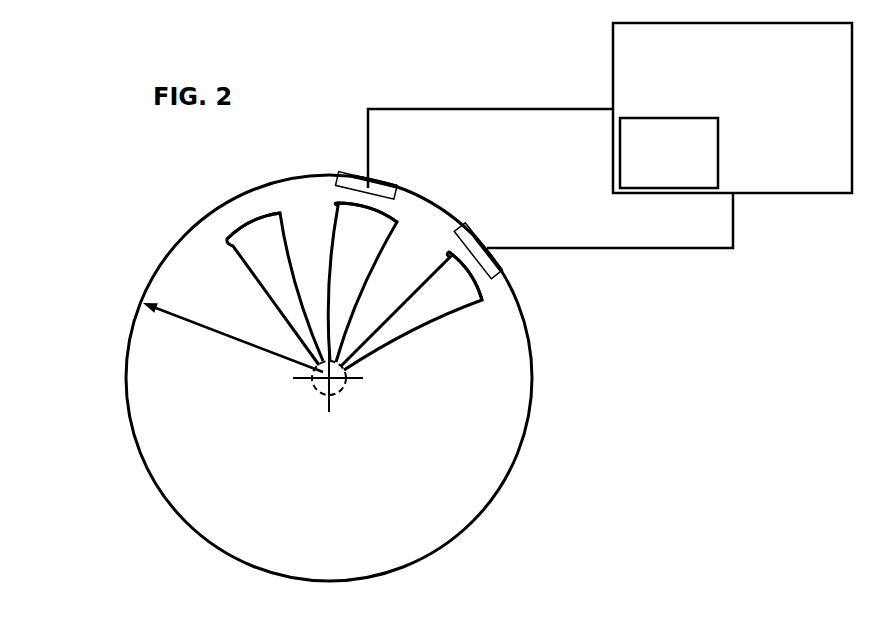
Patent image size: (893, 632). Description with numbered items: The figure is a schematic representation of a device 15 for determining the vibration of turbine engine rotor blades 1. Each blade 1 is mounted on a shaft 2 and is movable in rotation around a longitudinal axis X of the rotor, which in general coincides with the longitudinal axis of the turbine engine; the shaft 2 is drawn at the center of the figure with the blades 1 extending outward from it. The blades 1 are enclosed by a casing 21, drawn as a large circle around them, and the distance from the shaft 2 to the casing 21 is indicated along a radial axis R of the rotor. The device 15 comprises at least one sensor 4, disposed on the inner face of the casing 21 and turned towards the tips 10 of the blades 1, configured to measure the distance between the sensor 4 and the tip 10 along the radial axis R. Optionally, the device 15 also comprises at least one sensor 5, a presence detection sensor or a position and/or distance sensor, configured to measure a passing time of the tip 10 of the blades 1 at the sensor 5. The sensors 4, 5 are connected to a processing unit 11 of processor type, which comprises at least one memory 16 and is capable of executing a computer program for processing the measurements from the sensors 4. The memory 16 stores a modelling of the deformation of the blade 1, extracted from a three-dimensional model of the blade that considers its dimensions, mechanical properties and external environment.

The rotor blade 1 is at (277, 272).
The shaft 2 is at (335, 388).
The sensor 4 is at (348, 182).
The sensor 5 is at (388, 192).
The tip 10 is at (227, 240).
The processing unit 11 is at (732, 108).
The device 15 is at (90, 228).
The memory 16 is at (669, 153).
The casing 21 is at (533, 378).
The radial axis R is at (230, 342).
The longitudinal axis X is at (326, 384).